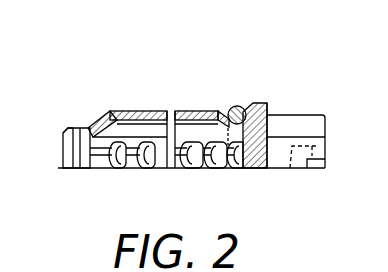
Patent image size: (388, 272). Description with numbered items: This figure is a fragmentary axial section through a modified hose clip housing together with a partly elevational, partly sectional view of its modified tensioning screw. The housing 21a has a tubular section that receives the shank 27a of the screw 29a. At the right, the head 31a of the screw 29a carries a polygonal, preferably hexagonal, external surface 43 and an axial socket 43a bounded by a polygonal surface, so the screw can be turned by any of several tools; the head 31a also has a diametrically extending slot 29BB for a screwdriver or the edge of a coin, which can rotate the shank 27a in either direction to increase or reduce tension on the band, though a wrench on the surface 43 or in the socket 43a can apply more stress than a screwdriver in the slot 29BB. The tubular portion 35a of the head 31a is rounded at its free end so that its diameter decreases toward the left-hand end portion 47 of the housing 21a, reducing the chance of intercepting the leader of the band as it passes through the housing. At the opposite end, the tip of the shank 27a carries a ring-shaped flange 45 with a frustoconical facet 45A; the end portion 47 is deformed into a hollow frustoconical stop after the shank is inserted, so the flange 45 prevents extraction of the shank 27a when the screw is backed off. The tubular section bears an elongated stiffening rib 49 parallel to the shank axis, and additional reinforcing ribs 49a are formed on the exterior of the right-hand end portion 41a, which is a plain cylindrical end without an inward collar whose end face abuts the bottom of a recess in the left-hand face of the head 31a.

The housing 21a is at (132, 110).
The shank 27a is at (103, 166).
The screw 29a is at (338, 100).
The slot 29BB is at (317, 170).
The head 31a is at (274, 103).
The tubular portion 35a is at (256, 96).
The right-hand end portion 41a is at (242, 134).
The external surface 43 is at (318, 126).
The axial socket 43a is at (328, 150).
The flange 45 is at (79, 170).
The frustoconical facet 45A is at (66, 127).
The end portion 47 is at (92, 128).
The reinforcing rib 49 is at (180, 110).
The additional reinforcing ribs 49a is at (236, 104).